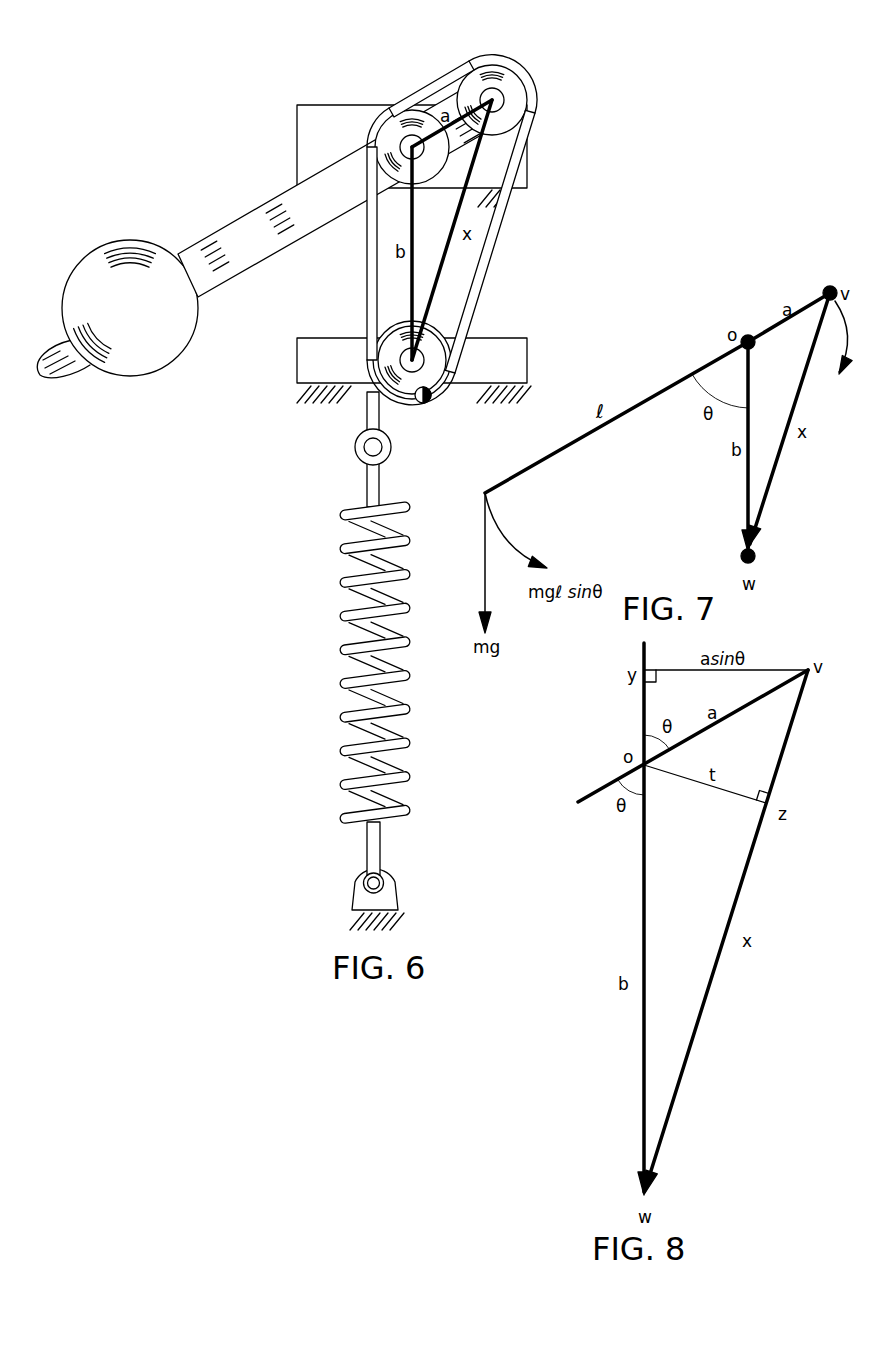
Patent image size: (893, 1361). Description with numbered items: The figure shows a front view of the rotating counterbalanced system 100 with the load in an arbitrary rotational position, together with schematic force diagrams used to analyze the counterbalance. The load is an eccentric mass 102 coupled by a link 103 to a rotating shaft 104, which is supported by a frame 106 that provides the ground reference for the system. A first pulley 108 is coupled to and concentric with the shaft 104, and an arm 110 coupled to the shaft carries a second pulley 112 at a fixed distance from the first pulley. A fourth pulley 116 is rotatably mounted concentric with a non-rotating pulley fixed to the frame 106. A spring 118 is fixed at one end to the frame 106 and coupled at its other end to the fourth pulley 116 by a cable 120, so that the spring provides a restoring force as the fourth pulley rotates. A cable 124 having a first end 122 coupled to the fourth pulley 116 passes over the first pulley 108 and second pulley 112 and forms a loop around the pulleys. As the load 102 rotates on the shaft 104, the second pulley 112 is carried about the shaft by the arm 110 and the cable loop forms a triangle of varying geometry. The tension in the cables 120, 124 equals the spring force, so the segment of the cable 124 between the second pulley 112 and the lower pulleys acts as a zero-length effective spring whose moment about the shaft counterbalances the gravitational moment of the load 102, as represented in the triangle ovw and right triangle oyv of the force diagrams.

The rotating counterbalanced system 100 is at (146, 86).
The eccentric mass 102 is at (132, 240).
The link 103 is at (263, 202).
The rotating shaft 104 is at (397, 112).
The frame 106 is at (517, 203).
The first pulley 108 is at (377, 117).
The arm 110 is at (443, 102).
The second pulley 112 is at (467, 73).
The fourth pulley 116 is at (375, 363).
The spring 118 is at (345, 507).
The cable 120 is at (365, 405).
The first end 122 is at (435, 398).
The cable 124 is at (493, 252).